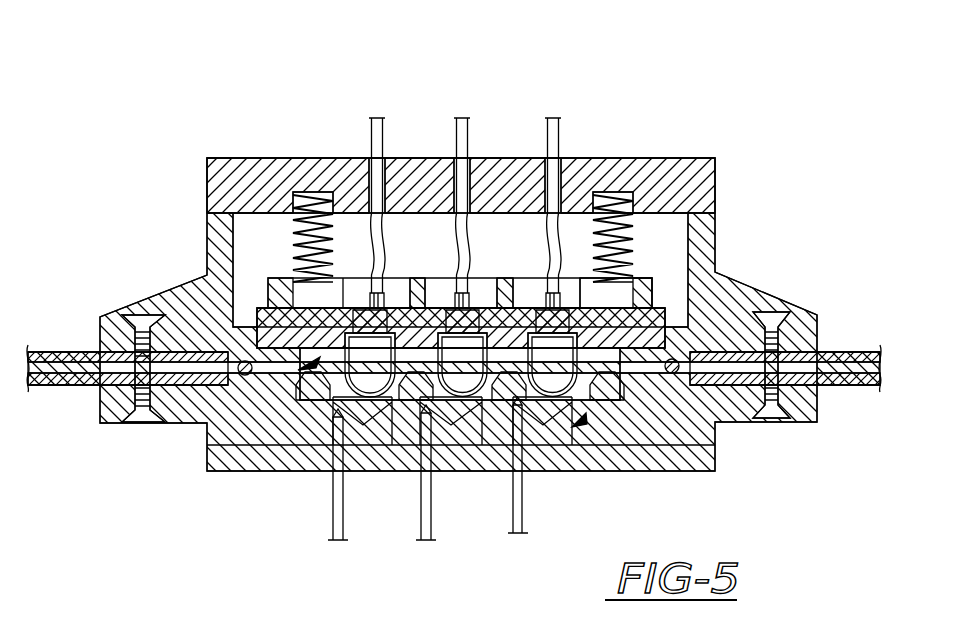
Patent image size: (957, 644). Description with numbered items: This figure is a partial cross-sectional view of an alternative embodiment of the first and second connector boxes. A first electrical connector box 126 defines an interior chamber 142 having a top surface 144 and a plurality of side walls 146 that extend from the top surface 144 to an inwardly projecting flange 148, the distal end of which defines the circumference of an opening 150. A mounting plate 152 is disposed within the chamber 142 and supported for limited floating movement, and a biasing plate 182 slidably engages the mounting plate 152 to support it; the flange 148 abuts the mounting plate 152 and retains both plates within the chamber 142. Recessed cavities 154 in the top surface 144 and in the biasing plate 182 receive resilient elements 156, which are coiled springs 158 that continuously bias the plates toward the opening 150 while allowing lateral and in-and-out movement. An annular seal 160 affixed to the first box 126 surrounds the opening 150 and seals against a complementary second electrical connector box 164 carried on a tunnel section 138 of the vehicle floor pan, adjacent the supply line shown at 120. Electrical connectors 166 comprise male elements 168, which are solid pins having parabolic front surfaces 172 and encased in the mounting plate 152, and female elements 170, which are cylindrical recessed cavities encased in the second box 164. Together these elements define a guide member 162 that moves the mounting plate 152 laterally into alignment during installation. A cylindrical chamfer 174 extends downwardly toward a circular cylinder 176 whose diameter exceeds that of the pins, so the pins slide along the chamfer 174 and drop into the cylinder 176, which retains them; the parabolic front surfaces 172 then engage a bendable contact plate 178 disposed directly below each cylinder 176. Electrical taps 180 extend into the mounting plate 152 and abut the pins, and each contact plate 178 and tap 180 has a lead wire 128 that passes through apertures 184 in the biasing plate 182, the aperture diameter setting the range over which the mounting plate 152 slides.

The supply conduit 120 is at (842, 352).
The first electrical connector box 126 is at (685, 196).
The lead wire 128 is at (466, 119).
The tunnel section 138 is at (846, 388).
The interior chamber 142 is at (525, 256).
The top surface 144 is at (265, 213).
The side walls 146 is at (233, 249).
The inwardly projecting flange 148 is at (671, 471).
The opening 150 is at (300, 318).
The mounting plate 152 is at (648, 341).
The recessed cavities 154 is at (318, 192).
The resilient elements 156 is at (652, 233).
The coiled springs 158 is at (248, 216).
The annular seal 160 is at (712, 471).
The guide member 162 is at (286, 471).
The second electrical connector box 164 is at (262, 420).
The electrical connectors 166 is at (600, 405).
The male element (pin) 168 is at (484, 372).
The female element (recessed cavity) 170 is at (388, 400).
The parabolic front surface 172 is at (400, 412).
The cylindrical chamfer 174 is at (320, 385).
The circular cylinder 176 is at (460, 462).
The bendable contact plate 178 is at (348, 402).
The electrical tap 180 is at (390, 302).
The biasing plate 182 is at (642, 294).
The apertures 184 is at (497, 286).